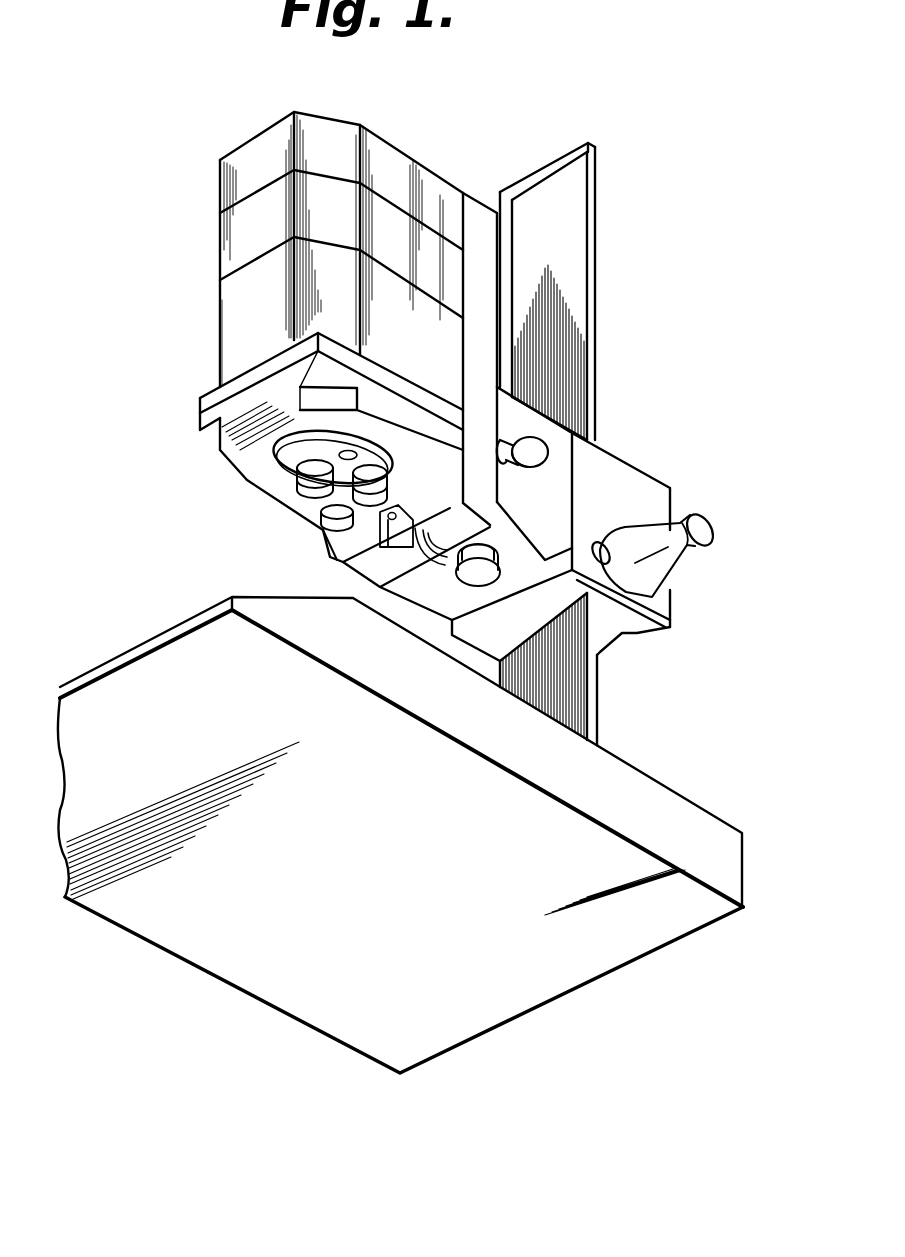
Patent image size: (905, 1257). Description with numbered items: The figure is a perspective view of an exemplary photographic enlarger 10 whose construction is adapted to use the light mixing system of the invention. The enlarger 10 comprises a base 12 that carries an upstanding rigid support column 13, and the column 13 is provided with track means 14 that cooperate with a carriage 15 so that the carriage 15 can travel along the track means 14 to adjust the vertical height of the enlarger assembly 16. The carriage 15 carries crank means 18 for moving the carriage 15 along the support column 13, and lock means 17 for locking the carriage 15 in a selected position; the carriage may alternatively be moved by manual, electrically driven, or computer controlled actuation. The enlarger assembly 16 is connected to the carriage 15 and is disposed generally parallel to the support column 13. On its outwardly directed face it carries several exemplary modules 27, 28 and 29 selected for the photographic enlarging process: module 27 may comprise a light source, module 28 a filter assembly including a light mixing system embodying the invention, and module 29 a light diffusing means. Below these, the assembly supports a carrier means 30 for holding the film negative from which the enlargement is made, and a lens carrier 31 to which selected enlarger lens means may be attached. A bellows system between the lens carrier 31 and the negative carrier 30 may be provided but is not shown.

The photographic enlarger 10 is at (516, 150).
The base 12 is at (392, 940).
The support column 13 is at (597, 227).
The track means 14 is at (583, 368).
The carriage 15 is at (667, 608).
The enlarger assembly 16 is at (295, 201).
The lock means 17 is at (600, 543).
The crank means 18 is at (713, 530).
The module 27 is at (232, 172).
The module 28 is at (230, 238).
The module 29 is at (235, 330).
The carrier means 30 is at (200, 405).
The lens carrier 31 is at (253, 477).